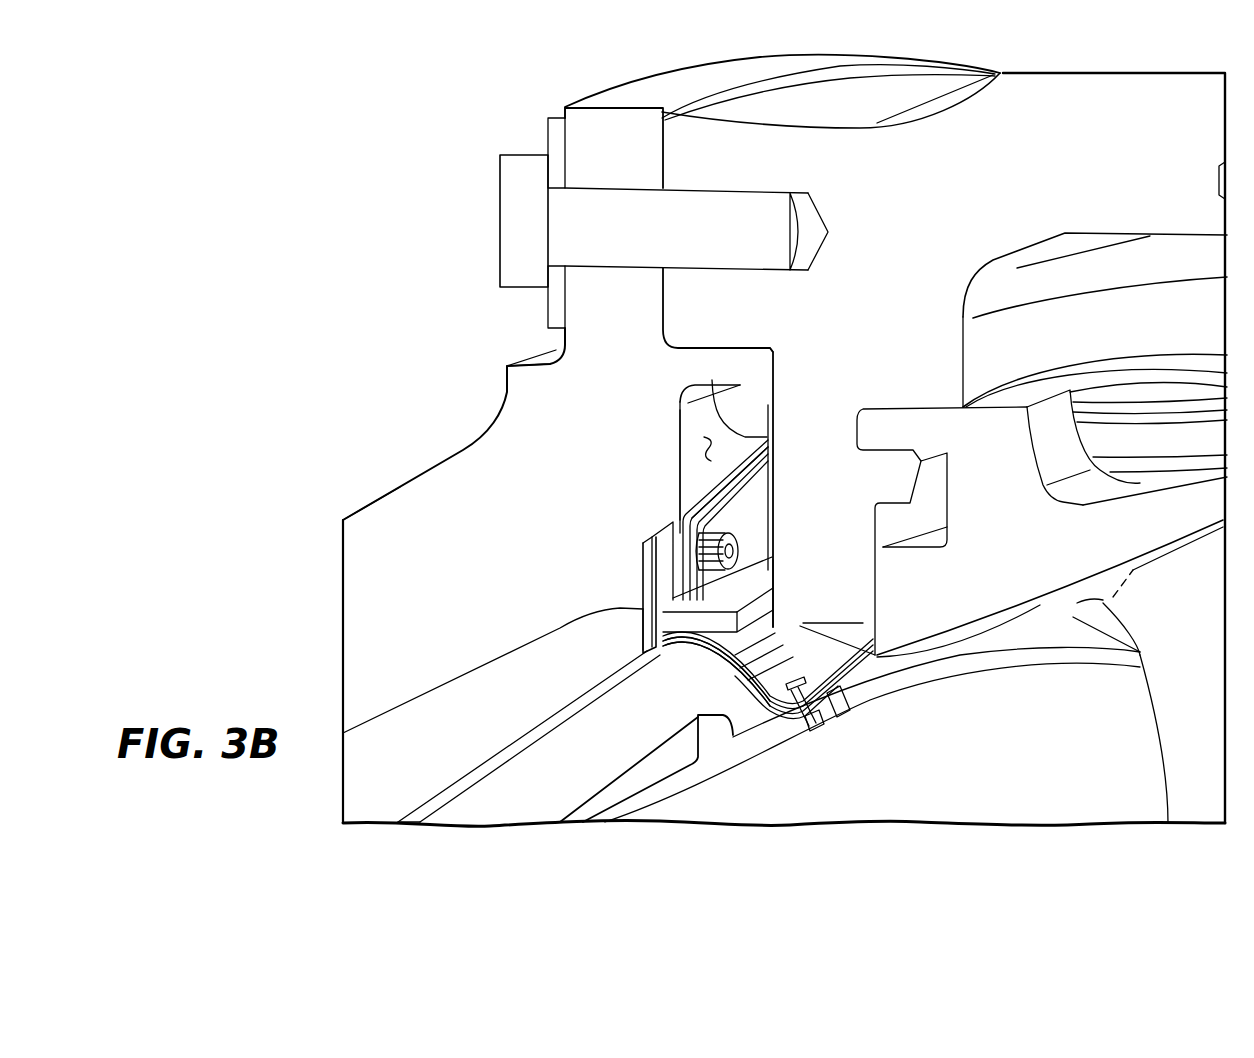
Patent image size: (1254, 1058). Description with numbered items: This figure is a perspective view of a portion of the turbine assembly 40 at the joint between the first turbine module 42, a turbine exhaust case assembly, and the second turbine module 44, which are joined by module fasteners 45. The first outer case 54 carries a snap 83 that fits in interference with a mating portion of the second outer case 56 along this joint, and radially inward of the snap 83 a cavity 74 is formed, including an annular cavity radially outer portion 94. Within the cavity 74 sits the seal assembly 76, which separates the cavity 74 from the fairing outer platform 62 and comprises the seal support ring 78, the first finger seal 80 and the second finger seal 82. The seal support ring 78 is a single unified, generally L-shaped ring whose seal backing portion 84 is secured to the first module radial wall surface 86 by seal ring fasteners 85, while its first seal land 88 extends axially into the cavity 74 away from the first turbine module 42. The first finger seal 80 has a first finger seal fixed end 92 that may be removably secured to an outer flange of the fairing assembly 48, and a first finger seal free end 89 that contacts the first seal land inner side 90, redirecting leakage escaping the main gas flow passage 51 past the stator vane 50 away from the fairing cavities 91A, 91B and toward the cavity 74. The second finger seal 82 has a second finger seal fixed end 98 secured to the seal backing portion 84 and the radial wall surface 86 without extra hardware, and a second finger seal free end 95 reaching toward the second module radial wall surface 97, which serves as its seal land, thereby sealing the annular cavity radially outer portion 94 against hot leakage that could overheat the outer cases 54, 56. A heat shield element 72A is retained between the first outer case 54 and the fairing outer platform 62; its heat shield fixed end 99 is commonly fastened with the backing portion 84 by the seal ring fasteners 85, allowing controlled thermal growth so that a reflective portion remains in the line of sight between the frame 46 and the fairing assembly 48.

The turbine assembly 40 is at (449, 97).
The first turbine module 42 is at (363, 305).
The second turbine module 44 is at (1002, 69).
The module fasteners 45 is at (518, 220).
The frame 46 is at (331, 425).
The fairing assembly 48 is at (701, 790).
The stator vane 50 is at (1026, 549).
The main gas flow passage 51 is at (958, 772).
The first outer case 54 is at (436, 587).
The second outer case 56 is at (871, 349).
The fairing outer platform 62 is at (640, 797).
The heat shield element 72A is at (487, 767).
The cavity 74 is at (673, 393).
The seal assembly 76 is at (768, 588).
The seal support ring 78 is at (642, 530).
The first finger seal 80 is at (731, 688).
The second finger seal 82 is at (752, 495).
The snap 83 is at (771, 354).
The seal backing portion 84 is at (663, 588).
The seal ring fastener 85 is at (698, 552).
The first module radial wall surface 86 is at (704, 441).
The first seal land 88 is at (729, 611).
The first finger seal free end 89 is at (673, 655).
The first seal land inner side 90 is at (683, 657).
The fairing cavity 91A is at (510, 712).
The fairing cavity 91B is at (605, 773).
The first finger seal fixed end 92 is at (840, 716).
The annular cavity radially outer portion 94 is at (683, 477).
The second finger seal free end 95 is at (712, 382).
The second module radial wall surface 97 is at (755, 538).
The second finger seal fixed end 98 is at (762, 626).
The heat shield fixed end 99 is at (645, 636).